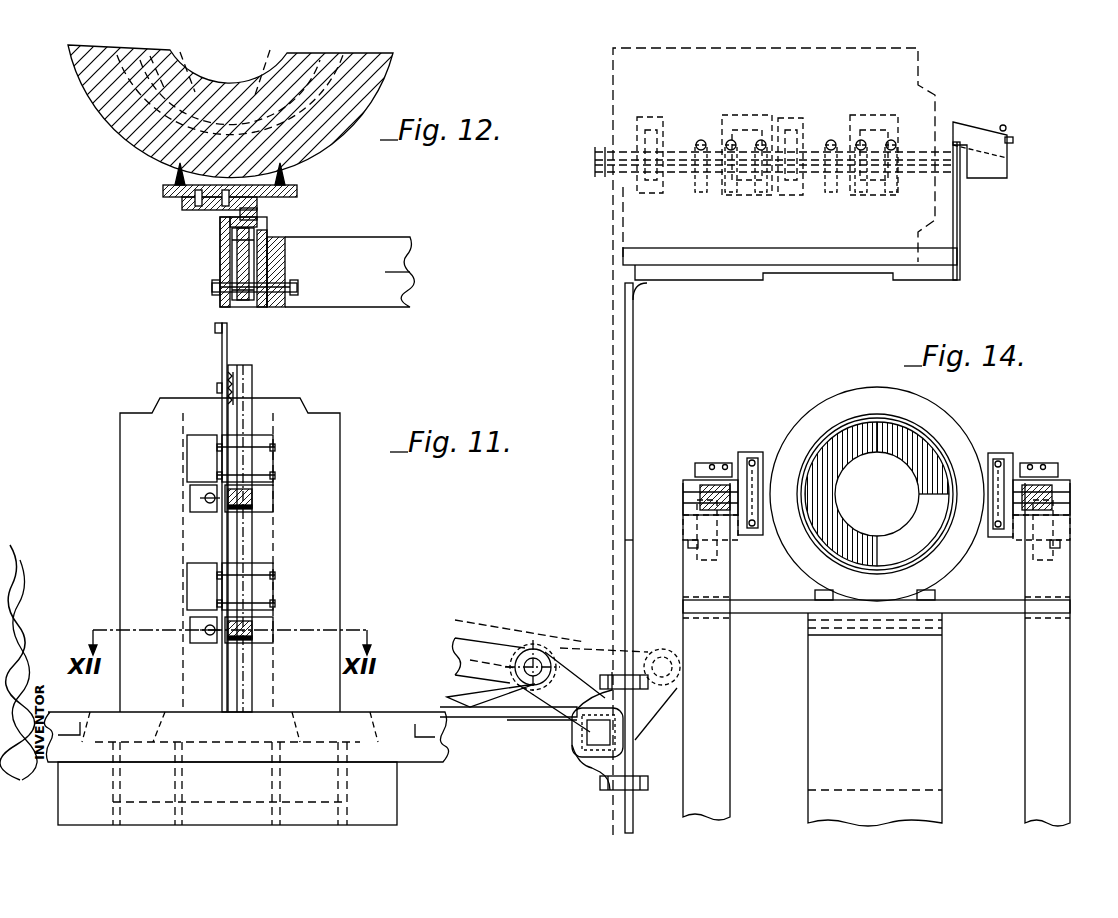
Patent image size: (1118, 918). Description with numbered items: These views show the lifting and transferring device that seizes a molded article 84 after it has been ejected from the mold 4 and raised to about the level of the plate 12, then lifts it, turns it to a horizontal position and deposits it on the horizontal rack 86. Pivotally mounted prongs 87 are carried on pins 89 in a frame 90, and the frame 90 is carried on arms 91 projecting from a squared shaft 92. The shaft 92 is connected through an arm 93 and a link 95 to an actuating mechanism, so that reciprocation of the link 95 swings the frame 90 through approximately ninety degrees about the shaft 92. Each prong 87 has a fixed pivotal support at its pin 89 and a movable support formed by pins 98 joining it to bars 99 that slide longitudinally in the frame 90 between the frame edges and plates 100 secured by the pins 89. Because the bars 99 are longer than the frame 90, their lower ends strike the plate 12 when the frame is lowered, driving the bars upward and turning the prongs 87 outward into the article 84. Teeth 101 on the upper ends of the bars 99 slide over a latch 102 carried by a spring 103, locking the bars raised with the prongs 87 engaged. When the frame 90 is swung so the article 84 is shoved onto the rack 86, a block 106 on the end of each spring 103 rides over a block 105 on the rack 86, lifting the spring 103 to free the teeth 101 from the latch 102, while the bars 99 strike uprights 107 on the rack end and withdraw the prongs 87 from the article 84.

In FIG. 11, the mold 4 is at (380, 812).
In FIG. 11, the plate 12 is at (425, 757).
In FIG. 12, the molded article 84 is at (92, 95).
In FIG. 11, the molded article 84 is at (122, 546).
In FIG. 14, the molded article 84 is at (846, 398).
In FIG. 11, the rack 86 is at (808, 265).
In FIG. 14, the rack 86 is at (773, 605).
In FIG. 12, the prongs 87 is at (170, 179).
In FIG. 11, the prongs 87 is at (190, 497).
In FIG. 14, the prongs 87 is at (762, 475).
In FIG. 12, the pins 89 is at (212, 290).
In FIG. 11, the pins 89 is at (214, 508).
In FIG. 14, the pins 89 is at (688, 545).
In FIG. 12, the frame 90 is at (287, 261).
In FIG. 11, the frame 90 is at (262, 543).
In FIG. 14, the frame 90 is at (683, 521).
In FIG. 12, the arms 91 is at (412, 271).
In FIG. 11, the arms 91 is at (625, 359).
In FIG. 14, the arms 91 is at (713, 731).
In FIG. 11, the squared shaft 92 is at (575, 740).
In FIG. 11, the arm 93 is at (558, 652).
In FIG. 11, the link 95 is at (474, 650).
In FIG. 12, the pins 98 is at (258, 212).
In FIG. 14, the pins 98 is at (712, 545).
In FIG. 12, the bars 99 is at (234, 266).
In FIG. 11, the bars 99 is at (254, 391).
In FIG. 14, the bars 99 is at (683, 496).
In FIG. 12, the plates 100 is at (222, 250).
In FIG. 11, the plates 100 is at (745, 145).
In FIG. 11, the teeth 101 is at (234, 388).
In FIG. 11, the latch 102 is at (220, 390).
In FIG. 11, the spring 103 is at (222, 356).
In FIG. 14, the spring 103 is at (695, 470).
In FIG. 11, the block 105 is at (1008, 169).
In FIG. 11, the block 106 is at (228, 329).
In FIG. 11, the uprights 107 is at (960, 216).